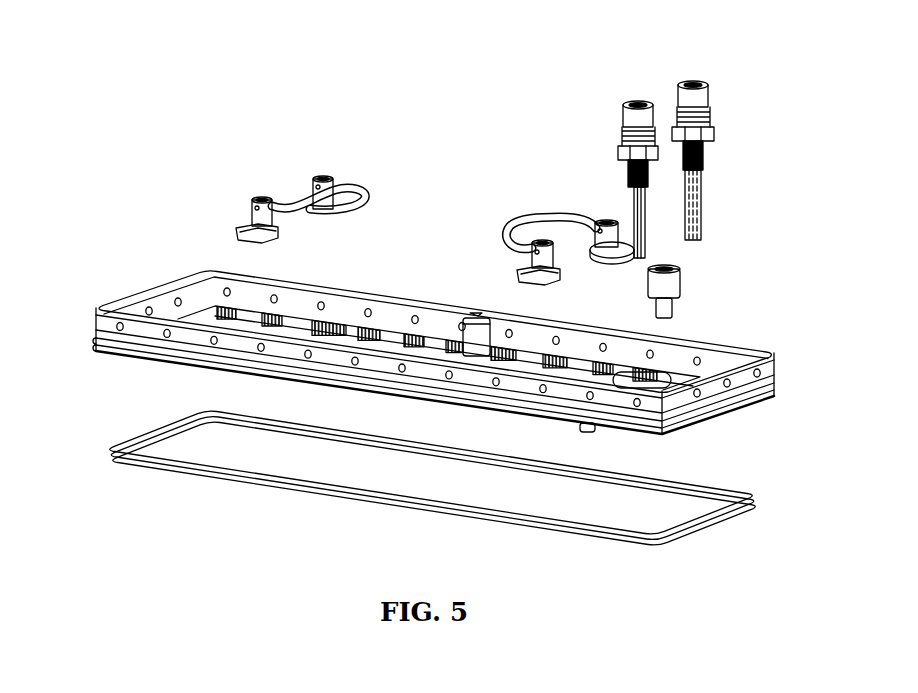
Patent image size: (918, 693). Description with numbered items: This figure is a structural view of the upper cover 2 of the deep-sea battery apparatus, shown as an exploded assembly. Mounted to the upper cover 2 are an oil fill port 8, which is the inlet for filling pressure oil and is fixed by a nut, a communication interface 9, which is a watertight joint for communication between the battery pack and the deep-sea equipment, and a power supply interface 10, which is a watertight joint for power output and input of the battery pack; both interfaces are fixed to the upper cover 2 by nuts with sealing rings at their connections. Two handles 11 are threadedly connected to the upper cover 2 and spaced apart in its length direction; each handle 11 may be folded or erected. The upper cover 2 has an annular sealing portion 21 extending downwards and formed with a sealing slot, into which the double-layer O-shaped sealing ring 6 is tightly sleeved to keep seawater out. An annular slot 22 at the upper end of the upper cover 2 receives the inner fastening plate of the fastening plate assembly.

The upper cover 2 is at (737, 347).
The sealing portion 21 is at (105, 350).
The annular slot 22 is at (197, 307).
The sealing ring 6 is at (700, 513).
The oil fill port 8 is at (667, 290).
The communication interface 9 is at (632, 102).
The power supply interface 10 is at (692, 97).
The handle 11 is at (327, 197).